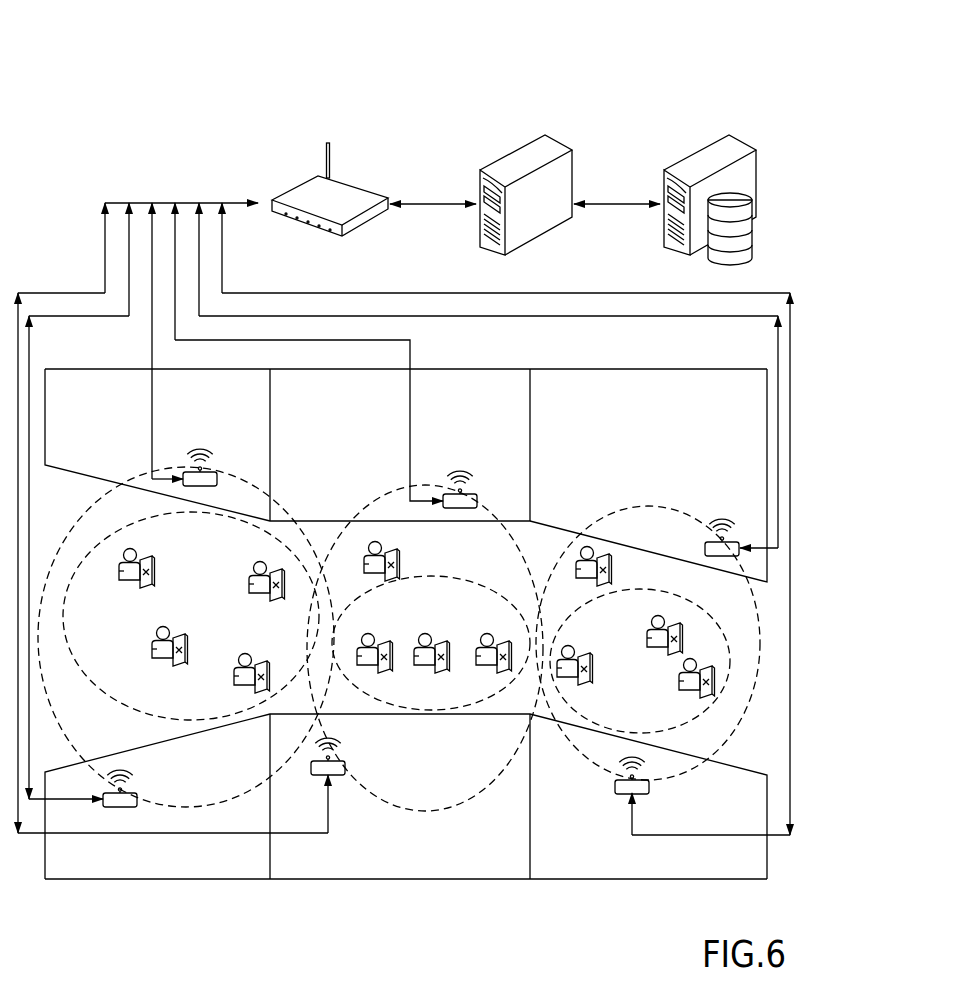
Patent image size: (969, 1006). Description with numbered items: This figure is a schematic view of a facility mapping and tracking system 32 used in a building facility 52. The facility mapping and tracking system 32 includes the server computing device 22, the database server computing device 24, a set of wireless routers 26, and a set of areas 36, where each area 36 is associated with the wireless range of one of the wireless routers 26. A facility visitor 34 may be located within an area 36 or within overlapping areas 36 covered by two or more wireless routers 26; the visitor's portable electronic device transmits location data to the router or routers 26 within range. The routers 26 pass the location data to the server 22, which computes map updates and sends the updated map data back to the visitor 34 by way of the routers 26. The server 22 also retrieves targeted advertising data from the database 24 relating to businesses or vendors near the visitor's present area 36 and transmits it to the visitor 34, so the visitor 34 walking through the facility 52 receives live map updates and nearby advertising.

The facility mapping and tracking system 32 is at (122, 38).
The server computing device 22 is at (555, 143).
The database server computing device 24 is at (740, 147).
The wireless router 26 is at (355, 184).
The facility visitor 34 is at (133, 580).
The area 36 is at (92, 512).
The building facility 52 is at (172, 920).